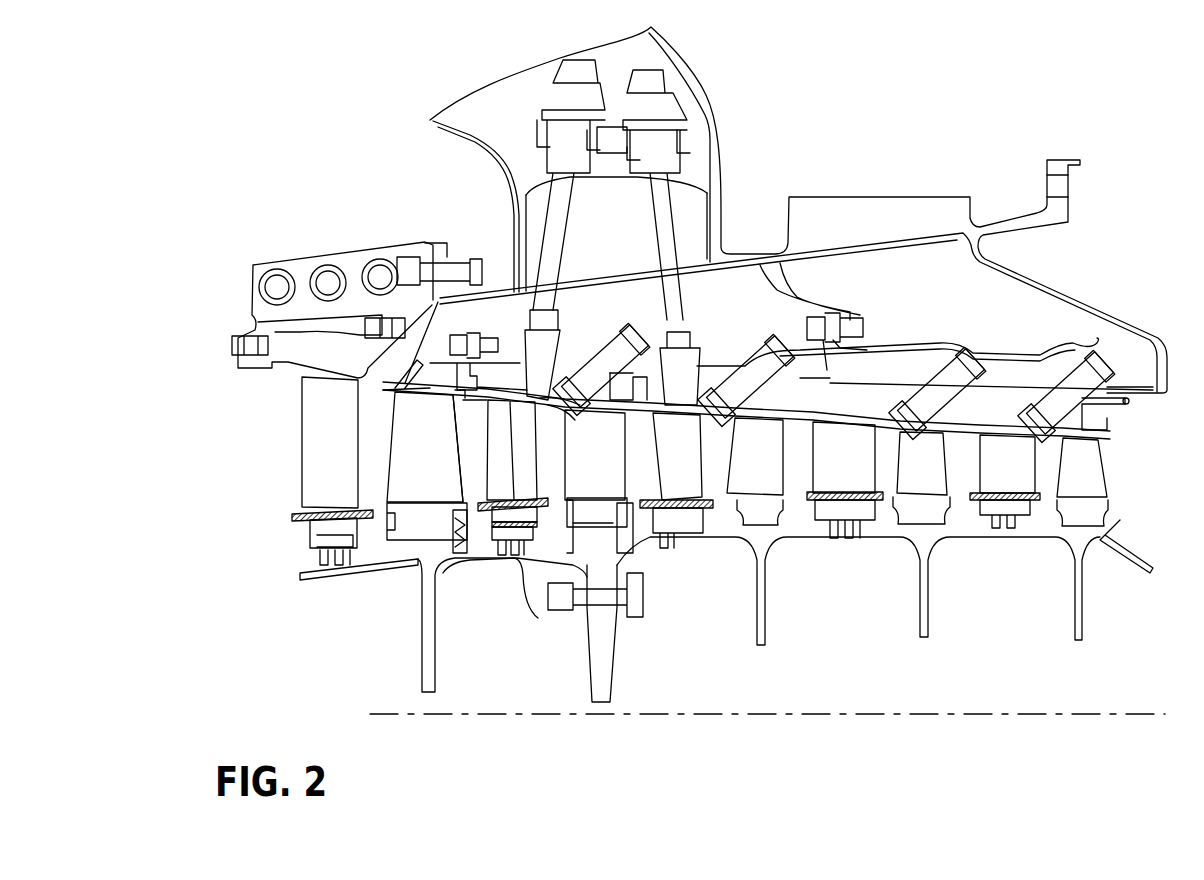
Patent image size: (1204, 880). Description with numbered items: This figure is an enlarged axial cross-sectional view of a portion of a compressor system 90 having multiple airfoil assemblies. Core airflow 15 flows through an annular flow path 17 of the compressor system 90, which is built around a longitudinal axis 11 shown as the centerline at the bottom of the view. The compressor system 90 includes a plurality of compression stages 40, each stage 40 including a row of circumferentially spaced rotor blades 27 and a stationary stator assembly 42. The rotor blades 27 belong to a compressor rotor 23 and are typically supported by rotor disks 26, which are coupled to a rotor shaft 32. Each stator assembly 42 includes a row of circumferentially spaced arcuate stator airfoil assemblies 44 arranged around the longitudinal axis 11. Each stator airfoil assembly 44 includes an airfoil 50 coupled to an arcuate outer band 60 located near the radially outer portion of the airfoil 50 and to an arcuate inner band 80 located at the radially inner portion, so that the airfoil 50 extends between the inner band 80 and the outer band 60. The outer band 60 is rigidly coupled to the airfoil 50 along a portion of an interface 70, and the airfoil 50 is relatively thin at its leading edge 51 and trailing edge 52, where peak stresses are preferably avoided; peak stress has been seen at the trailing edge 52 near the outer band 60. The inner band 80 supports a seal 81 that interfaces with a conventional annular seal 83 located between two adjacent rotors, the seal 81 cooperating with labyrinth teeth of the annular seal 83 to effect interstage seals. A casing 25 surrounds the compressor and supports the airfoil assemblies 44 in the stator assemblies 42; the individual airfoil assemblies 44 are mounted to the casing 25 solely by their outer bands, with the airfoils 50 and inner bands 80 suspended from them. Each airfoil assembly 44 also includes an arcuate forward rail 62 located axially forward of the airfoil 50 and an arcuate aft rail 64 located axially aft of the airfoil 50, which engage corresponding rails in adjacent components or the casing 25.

The longitudinal axis 11 is at (803, 712).
The core airflow 15 is at (335, 435).
The annular flow path 17 is at (465, 433).
The compressor rotor 23 is at (397, 575).
The casing 25 is at (800, 367).
The rotor disks 26 is at (437, 563).
The rotor blades 27 is at (432, 474).
The rotor shaft 32 is at (1133, 543).
The compression stage 40 is at (375, 481).
The stator assembly 42 is at (478, 490).
The stator airfoil assembly 44 is at (478, 468).
The airfoil 50 is at (520, 434).
The leading edge 51 is at (487, 428).
The trailing edge 52 is at (545, 460).
The outer band 60 is at (562, 398).
The forward rail 62 is at (455, 398).
The aft rail 64 is at (630, 400).
The interface 70 is at (562, 412).
The inner band 80 is at (510, 500).
The seal 81 is at (520, 513).
The annular seal 83 is at (530, 612).
The compressor system 90 is at (350, 125).